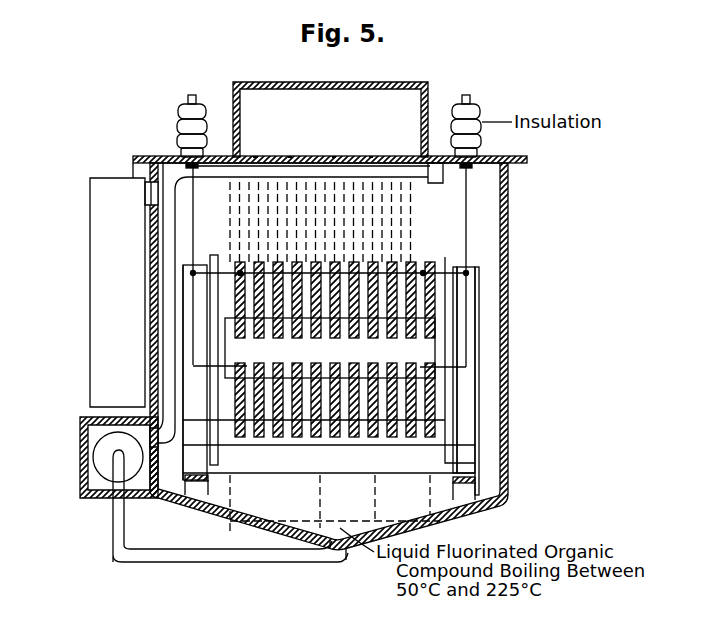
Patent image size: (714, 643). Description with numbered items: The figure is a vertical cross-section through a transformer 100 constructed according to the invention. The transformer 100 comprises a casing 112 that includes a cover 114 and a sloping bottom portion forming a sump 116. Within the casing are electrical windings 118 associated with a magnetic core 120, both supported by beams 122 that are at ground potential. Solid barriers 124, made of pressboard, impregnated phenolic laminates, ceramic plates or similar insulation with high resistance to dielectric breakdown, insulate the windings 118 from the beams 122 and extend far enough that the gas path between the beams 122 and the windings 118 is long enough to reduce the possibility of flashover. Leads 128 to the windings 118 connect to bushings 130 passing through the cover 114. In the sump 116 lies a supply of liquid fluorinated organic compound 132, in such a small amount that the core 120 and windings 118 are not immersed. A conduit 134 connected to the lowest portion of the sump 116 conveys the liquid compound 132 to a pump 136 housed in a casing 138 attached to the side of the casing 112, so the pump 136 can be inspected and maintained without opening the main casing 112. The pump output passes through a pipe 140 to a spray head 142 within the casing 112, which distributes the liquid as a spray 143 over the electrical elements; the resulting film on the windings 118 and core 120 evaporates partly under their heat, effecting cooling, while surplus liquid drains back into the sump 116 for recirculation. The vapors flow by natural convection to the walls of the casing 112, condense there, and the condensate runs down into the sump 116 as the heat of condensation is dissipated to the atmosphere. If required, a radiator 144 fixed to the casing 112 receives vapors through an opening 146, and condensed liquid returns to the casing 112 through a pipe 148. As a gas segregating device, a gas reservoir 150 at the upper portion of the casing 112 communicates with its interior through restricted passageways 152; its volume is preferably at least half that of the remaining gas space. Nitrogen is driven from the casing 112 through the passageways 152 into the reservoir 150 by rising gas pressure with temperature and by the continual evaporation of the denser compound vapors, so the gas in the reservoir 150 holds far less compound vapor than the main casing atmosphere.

The transformer 100 is at (354, 356).
The casing 112 is at (508, 358).
The cover 114 is at (499, 158).
The sump 116 is at (283, 542).
The electrical windings 118 is at (410, 360).
The magnetic core 120 is at (435, 402).
The beams 122 is at (196, 305).
The solid barriers 124 is at (214, 255).
The leads 128 is at (193, 199).
The bushings 130 is at (178, 112).
The liquid fluorinated organic compound 132 is at (346, 558).
The conduit 134 is at (172, 563).
The pump 136 is at (100, 456).
The pump casing 138 is at (80, 430).
The pipe 140 is at (171, 340).
The spray head 142 is at (415, 179).
The spray 143 is at (403, 245).
The radiator 144 is at (92, 198).
The opening 146 is at (150, 190).
The pipe 148 is at (151, 400).
The gas reservoir 150 is at (416, 82).
The restricted passageways 152 is at (371, 157).